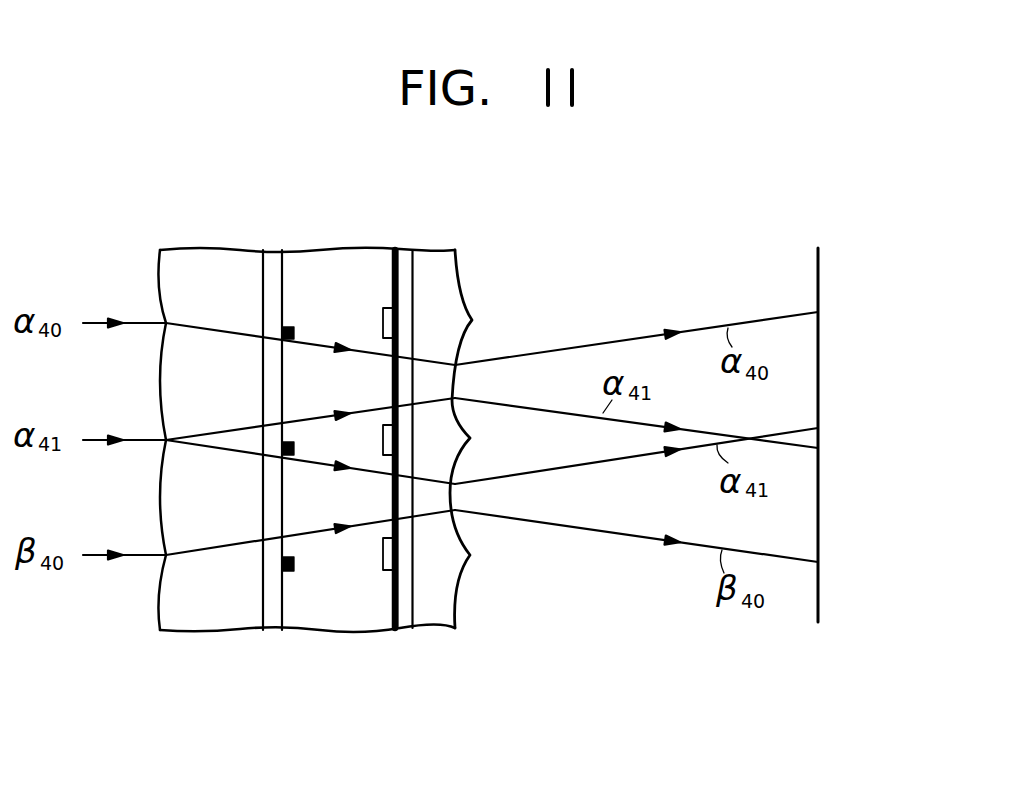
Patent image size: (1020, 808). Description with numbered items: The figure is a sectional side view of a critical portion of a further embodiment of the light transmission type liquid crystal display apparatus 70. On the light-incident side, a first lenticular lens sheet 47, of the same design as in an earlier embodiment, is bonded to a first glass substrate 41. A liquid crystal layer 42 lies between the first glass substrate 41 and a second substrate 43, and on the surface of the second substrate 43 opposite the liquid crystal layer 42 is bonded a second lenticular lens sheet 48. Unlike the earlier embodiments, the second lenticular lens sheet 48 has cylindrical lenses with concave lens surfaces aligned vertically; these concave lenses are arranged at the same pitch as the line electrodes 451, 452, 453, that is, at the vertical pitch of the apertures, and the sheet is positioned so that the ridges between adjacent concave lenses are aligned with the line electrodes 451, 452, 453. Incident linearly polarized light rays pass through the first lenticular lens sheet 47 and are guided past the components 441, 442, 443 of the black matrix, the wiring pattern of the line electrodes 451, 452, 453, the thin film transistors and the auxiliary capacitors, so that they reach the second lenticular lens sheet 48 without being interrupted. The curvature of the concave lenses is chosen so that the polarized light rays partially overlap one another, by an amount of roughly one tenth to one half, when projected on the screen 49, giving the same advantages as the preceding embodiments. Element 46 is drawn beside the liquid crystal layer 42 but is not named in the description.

The light transmission type liquid crystal display apparatus 70 is at (282, 246).
The first glass substrate 41 is at (276, 618).
The liquid crystal layer 42 is at (365, 608).
The second substrate 43 is at (410, 618).
The reflecting layer 46 is at (398, 262).
The first lenticular lens sheet 47 is at (183, 593).
The second lenticular lens sheet 48 is at (437, 618).
The screen 49 is at (822, 267).
The black matrix component 441 is at (287, 327).
The black matrix component 442 is at (282, 448).
The black matrix component 443 is at (289, 572).
The line electrode 451 is at (394, 322).
The line electrode 452 is at (397, 440).
The line electrode 453 is at (398, 553).